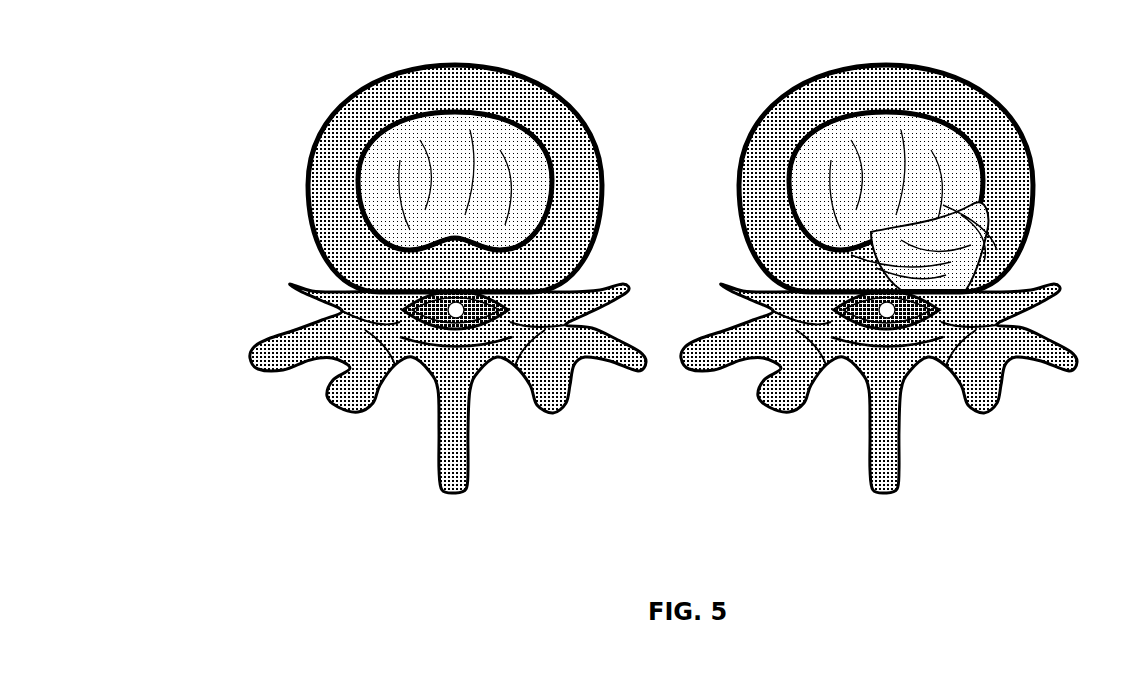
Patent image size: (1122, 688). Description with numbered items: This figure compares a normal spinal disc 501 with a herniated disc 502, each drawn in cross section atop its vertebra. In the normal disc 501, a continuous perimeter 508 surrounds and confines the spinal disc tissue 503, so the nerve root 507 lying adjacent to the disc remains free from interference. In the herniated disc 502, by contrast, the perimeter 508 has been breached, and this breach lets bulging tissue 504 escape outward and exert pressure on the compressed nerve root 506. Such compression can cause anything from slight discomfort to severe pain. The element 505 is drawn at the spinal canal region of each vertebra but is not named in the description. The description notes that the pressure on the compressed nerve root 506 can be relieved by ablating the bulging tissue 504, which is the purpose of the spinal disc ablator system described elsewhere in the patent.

The normal spinal disc 501 is at (340, 76).
The herniated disc 502 is at (1010, 70).
The spinal disc tissue 503 is at (387, 203).
The bulging tissue 504 is at (983, 244).
The spinal cord / spinal canal 505 is at (467, 320).
The compressed nerve root 506 is at (883, 388).
The nerve root 507 is at (550, 307).
The perimeter 508 is at (375, 138).